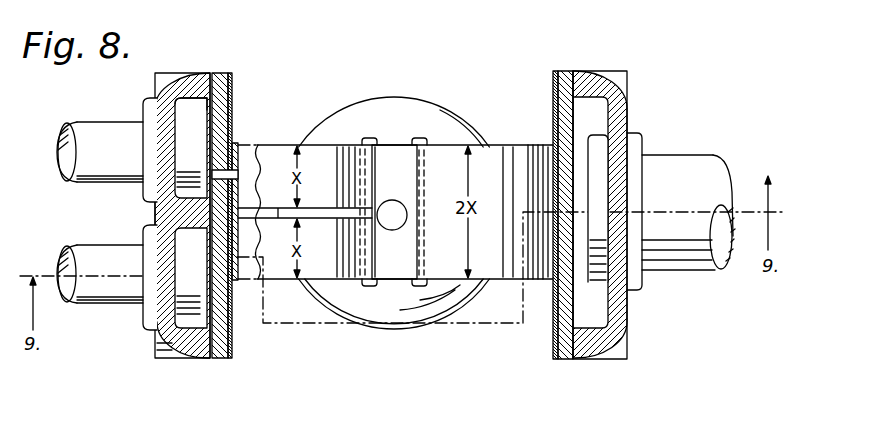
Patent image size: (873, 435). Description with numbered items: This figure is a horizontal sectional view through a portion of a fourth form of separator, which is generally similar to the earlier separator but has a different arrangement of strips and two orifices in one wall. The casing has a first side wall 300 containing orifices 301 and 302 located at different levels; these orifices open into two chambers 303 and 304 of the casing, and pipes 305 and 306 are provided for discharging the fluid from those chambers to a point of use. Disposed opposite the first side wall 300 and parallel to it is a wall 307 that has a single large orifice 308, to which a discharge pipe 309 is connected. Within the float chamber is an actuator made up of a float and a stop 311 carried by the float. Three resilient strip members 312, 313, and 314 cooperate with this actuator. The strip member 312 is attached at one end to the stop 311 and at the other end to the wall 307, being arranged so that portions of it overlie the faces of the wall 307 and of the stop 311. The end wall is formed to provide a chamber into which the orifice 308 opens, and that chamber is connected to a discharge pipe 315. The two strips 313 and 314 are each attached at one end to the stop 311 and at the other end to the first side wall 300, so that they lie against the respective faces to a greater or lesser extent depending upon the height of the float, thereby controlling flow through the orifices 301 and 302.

The first side wall 300 is at (220, 360).
The orifice 301 is at (239, 254).
The orifice 302 is at (238, 143).
The chamber 303 is at (199, 323).
The chamber 304 is at (195, 92).
The pipe 305 is at (93, 296).
The pipe 306 is at (101, 177).
The wall 307 is at (565, 355).
The orifice 308 is at (530, 166).
The discharge pipe 309 is at (687, 257).
The stop 311 is at (402, 150).
The resilient strip member 312 is at (455, 262).
The resilient strip member 313 is at (282, 280).
The resilient strip member 314 is at (330, 153).
The discharge pipe 315 is at (603, 121).